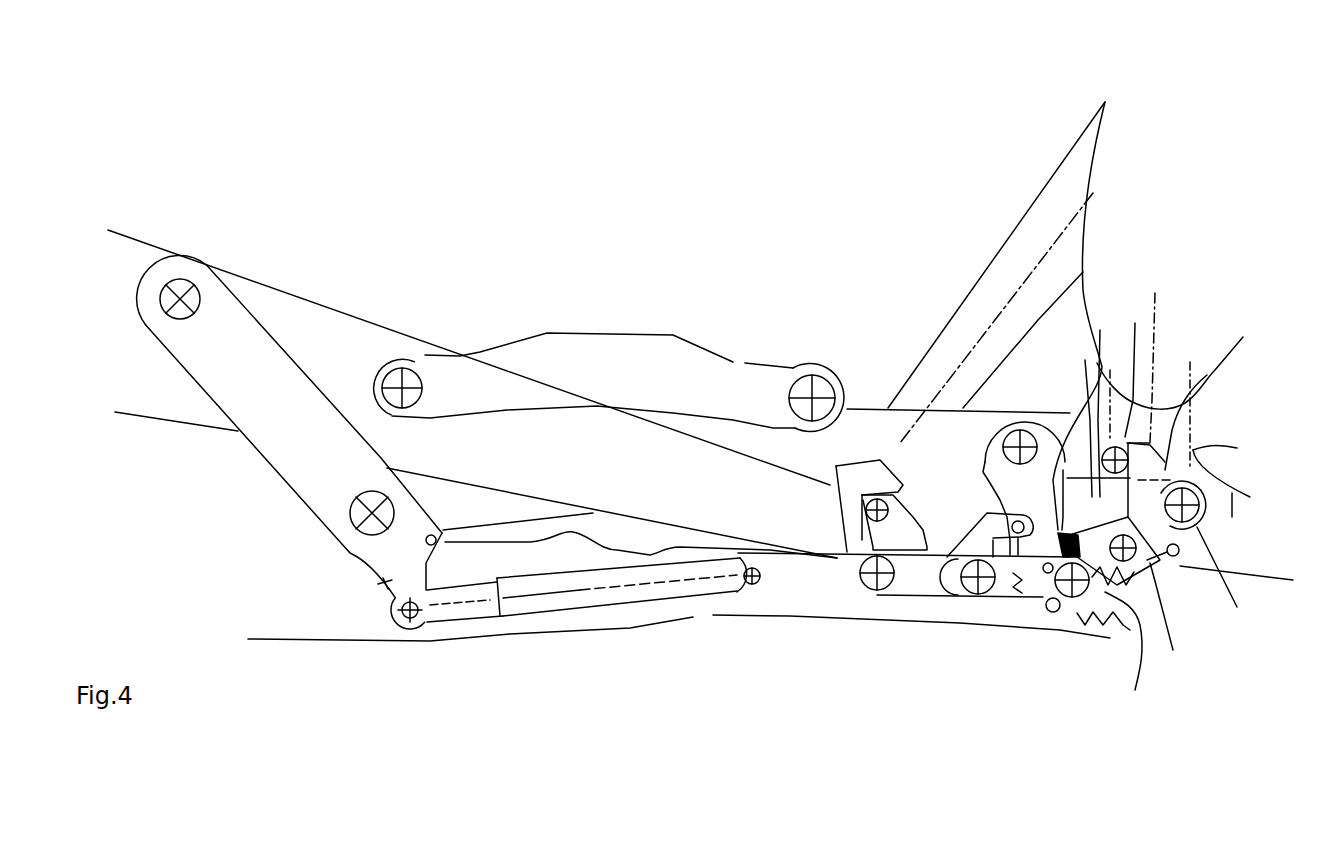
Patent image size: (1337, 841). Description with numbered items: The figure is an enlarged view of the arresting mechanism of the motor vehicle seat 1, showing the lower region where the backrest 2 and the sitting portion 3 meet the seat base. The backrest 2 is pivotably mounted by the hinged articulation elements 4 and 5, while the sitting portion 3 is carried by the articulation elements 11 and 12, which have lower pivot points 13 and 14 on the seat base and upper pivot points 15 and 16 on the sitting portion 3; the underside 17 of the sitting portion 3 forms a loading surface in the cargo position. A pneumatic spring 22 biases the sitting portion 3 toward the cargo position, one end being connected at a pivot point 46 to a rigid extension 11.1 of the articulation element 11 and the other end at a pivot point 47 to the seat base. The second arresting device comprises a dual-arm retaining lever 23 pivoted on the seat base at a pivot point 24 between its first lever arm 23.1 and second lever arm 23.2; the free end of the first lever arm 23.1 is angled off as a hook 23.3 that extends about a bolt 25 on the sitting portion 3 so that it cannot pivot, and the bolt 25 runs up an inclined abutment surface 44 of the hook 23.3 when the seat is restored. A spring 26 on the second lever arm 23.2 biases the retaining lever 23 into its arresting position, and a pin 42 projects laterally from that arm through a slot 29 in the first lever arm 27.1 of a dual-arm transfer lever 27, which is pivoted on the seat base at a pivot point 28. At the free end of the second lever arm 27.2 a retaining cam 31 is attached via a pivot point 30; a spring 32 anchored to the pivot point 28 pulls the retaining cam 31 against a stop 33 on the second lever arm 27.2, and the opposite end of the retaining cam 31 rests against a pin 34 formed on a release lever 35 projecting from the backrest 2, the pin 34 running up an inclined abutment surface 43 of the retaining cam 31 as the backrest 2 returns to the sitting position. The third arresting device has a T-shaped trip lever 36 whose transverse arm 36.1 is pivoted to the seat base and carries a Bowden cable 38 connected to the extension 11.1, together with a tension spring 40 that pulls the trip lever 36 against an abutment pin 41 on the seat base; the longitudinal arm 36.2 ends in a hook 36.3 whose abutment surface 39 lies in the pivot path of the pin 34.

The motor vehicle seat 1 is at (828, 71).
The backrest 2 is at (1128, 102).
The sitting portion 3 is at (343, 340).
The articulation element 4 is at (1038, 235).
The articulation element 5 is at (1178, 432).
The articulation element 11 is at (243, 337).
The rigid extension 11.1 is at (382, 588).
The articulation element 12 is at (608, 350).
The lower pivot point 13 is at (352, 552).
The lower pivot point 14 is at (811, 375).
The upper pivot point 15 is at (187, 290).
The upper pivot point 16 is at (402, 410).
The underside 17 is at (140, 417).
The pneumatic spring 22 is at (577, 600).
The retaining lever 23 is at (833, 595).
The first lever arm 23.1 is at (852, 515).
The second lever arm 23.2 is at (917, 580).
The hook 23.3 is at (862, 473).
The pivot point 24 is at (880, 590).
The bolt 25 is at (890, 508).
The spring 26 is at (1015, 597).
The transfer lever 27 is at (1057, 480).
The first lever arm 27.1 is at (1005, 587).
The second lever arm 27.2 is at (1133, 647).
The pivot point 28 is at (1068, 600).
The slot 29 is at (950, 583).
The pivot point 30 is at (1210, 532).
The retaining cam 31 is at (1205, 497).
The spring 32 is at (1018, 430).
The stop 33 is at (1178, 556).
The pin 34 is at (1135, 323).
The release lever 35 is at (1085, 360).
The trip lever 36 is at (1073, 530).
The transverse arm 36.1 is at (990, 483).
The longitudinal arm 36.2 is at (1110, 370).
The hook 36.3 is at (1167, 551).
The Bowden cable 38 is at (497, 547).
The abutment surface 39 is at (1237, 448).
The tension spring 40 is at (1095, 630).
The abutment pin 41 is at (1171, 624).
The pin 42 is at (982, 597).
The inclined abutment surface 43 is at (1222, 372).
The inclined abutment surface 44 is at (892, 475).
The pivot point 46 is at (410, 632).
The pivot point 47 is at (730, 596).